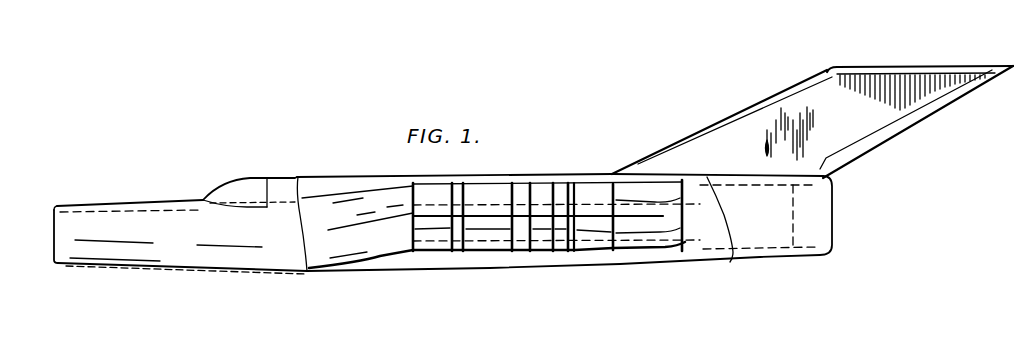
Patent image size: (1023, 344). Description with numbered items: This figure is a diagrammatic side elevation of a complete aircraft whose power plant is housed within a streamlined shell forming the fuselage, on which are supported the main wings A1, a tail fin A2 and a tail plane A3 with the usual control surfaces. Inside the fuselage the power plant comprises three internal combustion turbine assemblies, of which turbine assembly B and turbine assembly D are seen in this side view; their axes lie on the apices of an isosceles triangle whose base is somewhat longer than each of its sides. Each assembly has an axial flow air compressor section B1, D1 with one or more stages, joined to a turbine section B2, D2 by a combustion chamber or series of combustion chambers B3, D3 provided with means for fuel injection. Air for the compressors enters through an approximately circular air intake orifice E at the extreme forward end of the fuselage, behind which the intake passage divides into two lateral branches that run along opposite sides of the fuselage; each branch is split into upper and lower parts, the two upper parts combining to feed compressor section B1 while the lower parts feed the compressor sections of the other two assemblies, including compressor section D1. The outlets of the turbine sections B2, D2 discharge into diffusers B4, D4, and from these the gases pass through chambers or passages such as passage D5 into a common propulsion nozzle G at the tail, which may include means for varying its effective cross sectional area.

The air intake orifice E is at (54, 234).
The main wings A1 is at (330, 177).
The tail fin A2 is at (757, 120).
The tail plane A3 is at (893, 73).
The internal combustion turbine assembly B is at (508, 196).
The air compressor section B1 is at (495, 196).
The turbine section B2 is at (570, 192).
The combustion chamber B3 is at (525, 192).
The diffuser B4 is at (603, 196).
The internal combustion turbine assembly D is at (507, 237).
The air compressor section D1 is at (483, 227).
The turbine section D2 is at (570, 235).
The combustion chamber D3 is at (548, 235).
The diffuser D4 is at (592, 236).
The passage D5 is at (655, 232).
The propulsion nozzle G is at (738, 228).